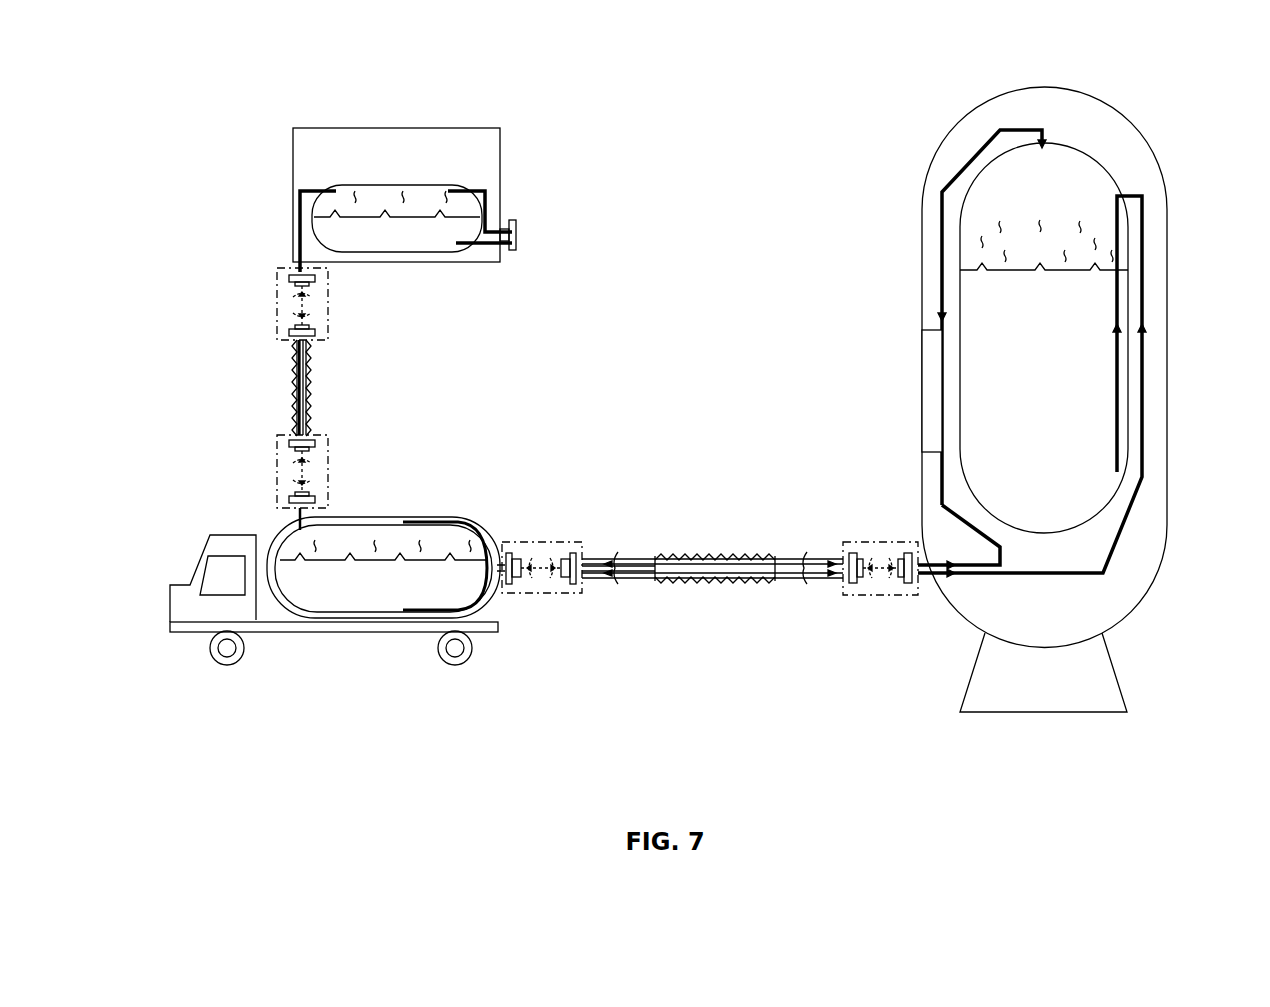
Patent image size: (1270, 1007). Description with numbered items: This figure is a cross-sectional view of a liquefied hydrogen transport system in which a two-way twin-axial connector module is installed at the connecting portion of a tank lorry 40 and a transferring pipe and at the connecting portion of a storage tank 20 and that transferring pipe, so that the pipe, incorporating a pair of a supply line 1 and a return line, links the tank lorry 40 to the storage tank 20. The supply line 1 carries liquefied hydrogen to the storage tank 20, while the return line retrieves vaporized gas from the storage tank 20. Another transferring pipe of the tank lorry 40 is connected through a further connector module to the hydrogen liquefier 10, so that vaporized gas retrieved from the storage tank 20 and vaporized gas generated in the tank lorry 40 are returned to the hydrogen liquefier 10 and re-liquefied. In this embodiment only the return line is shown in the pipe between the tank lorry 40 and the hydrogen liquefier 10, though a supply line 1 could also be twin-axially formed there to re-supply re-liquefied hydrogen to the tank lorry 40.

The supply line 1 is at (633, 581).
The hydrogen liquefier 10 is at (478, 150).
The storage tank 20 is at (1105, 122).
The tank lorry 40 is at (448, 517).